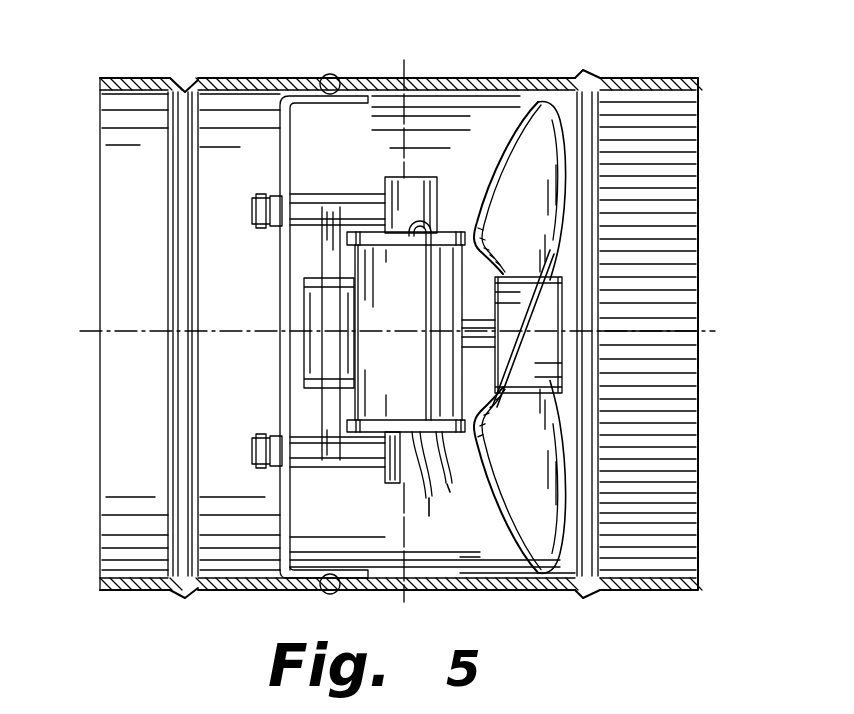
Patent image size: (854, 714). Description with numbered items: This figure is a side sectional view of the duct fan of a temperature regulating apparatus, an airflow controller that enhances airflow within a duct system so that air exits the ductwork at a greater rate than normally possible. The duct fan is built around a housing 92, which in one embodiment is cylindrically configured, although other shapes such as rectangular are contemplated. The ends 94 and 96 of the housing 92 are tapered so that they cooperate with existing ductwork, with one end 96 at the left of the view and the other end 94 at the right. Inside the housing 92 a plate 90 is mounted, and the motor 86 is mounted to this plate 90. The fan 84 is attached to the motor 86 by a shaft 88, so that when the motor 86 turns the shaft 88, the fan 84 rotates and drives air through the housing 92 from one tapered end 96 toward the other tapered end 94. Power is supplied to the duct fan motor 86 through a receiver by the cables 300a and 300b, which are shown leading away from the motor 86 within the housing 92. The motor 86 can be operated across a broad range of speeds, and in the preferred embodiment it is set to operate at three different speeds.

The fan 84 is at (520, 100).
The motor 86 is at (453, 100).
The shaft 88 is at (470, 358).
The plate 90 is at (282, 290).
The housing 92 is at (241, 78).
The end 94 is at (652, 112).
The end 96 is at (134, 78).
The cable 300a is at (449, 485).
The cable 300b is at (414, 495).